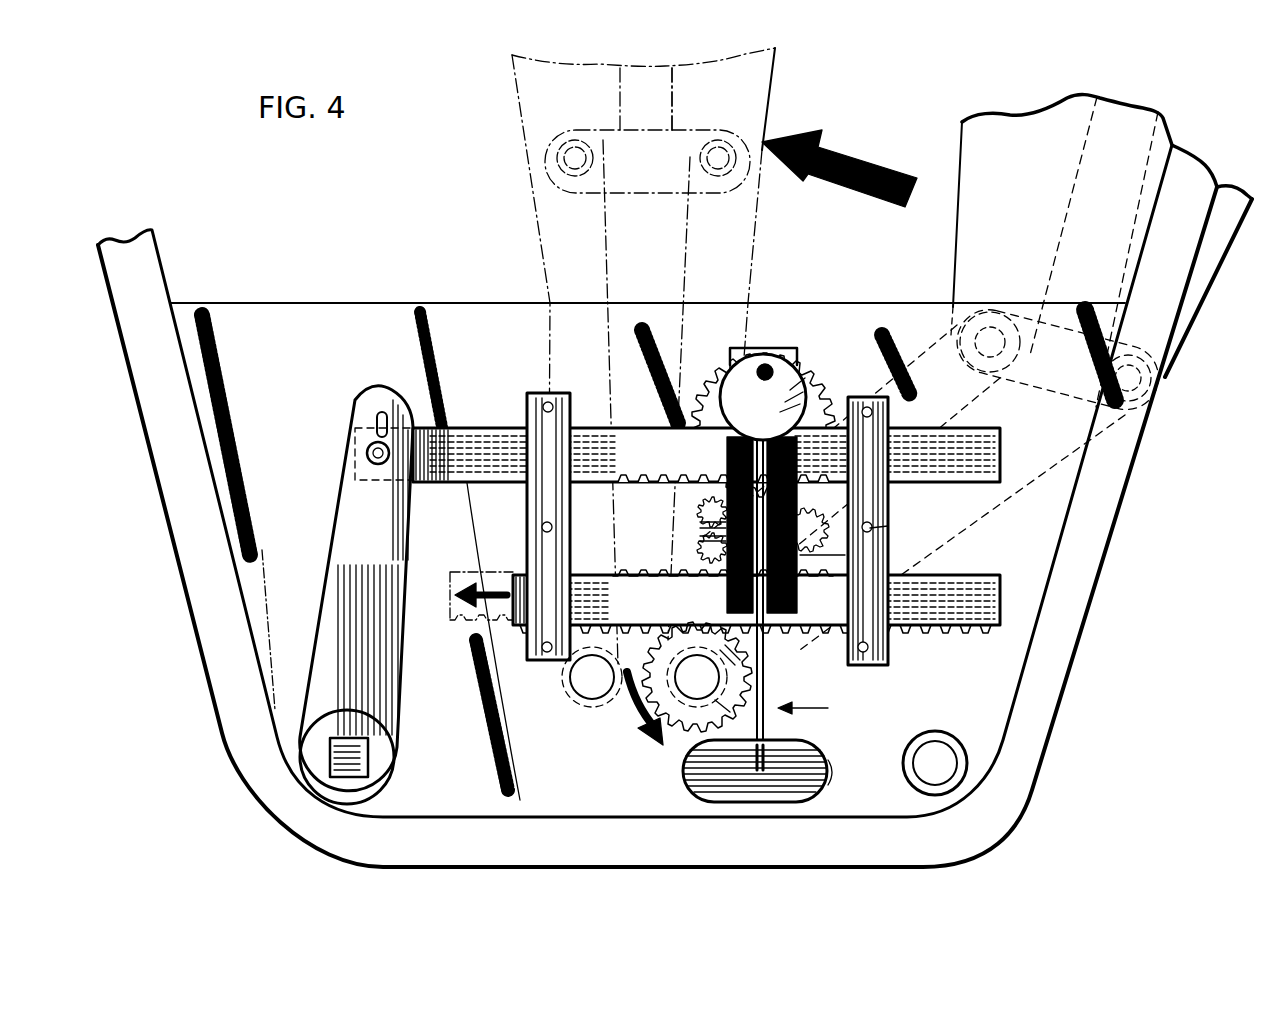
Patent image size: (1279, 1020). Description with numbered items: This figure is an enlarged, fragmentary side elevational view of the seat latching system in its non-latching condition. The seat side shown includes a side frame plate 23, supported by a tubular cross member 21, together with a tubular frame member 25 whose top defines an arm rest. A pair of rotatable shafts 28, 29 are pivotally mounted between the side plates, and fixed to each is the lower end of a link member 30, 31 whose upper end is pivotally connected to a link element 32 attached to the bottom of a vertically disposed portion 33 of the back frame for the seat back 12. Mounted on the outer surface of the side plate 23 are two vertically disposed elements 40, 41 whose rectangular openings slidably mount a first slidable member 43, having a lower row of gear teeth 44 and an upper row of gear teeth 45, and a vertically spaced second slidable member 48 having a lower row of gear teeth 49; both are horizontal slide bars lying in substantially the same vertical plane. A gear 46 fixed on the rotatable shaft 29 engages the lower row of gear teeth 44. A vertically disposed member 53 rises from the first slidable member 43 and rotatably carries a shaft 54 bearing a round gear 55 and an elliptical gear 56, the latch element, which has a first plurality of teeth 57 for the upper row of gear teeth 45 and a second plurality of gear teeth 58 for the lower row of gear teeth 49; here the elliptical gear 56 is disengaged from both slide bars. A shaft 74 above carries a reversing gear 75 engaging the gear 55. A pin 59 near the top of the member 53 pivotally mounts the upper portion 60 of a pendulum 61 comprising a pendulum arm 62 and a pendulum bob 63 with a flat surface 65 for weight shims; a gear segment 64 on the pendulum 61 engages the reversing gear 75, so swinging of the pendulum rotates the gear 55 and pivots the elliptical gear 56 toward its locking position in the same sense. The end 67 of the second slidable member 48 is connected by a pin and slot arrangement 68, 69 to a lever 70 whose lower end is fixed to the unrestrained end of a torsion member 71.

The seat back 12 is at (520, 105).
The tubular cross member 21 is at (915, 765).
The side frame plate 23 is at (294, 340).
The tubular frame member 25 is at (1075, 600).
The rotatable shaft 28 is at (578, 688).
The rotatable shaft 29 is at (725, 680).
The link member 30 is at (548, 220).
The link member 31 is at (732, 236).
The link element 32 is at (667, 167).
The vertically disposed portion 33 is at (670, 88).
The vertically disposed element 40 is at (540, 490).
The vertically disposed element 41 is at (870, 528).
The first slidable member 43 is at (707, 609).
The lower row of gear teeth 44 is at (930, 635).
The upper row of gear teeth 45 is at (630, 575).
The gear 46 is at (690, 732).
The second slidable member 48 is at (500, 459).
The lower row of gear teeth 49 is at (635, 484).
The vertically disposed member 53 is at (770, 640).
The shaft 54 is at (705, 560).
The round gear 55 is at (700, 540).
The elliptical gear 56 is at (700, 520).
The first plurality of teeth 57 is at (860, 555).
The second plurality of gear teeth 58 is at (700, 500).
The pin 59 is at (772, 345).
The upper portion 60 is at (800, 370).
The pendulum 61 is at (816, 708).
The pendulum arm 62 is at (764, 722).
The pendulum bob 63 is at (830, 775).
The gear segment 64 is at (720, 400).
The flat surface 65 is at (755, 771).
The end 67 is at (425, 428).
The pin 68 is at (368, 452).
The slot 69 is at (375, 412).
The lever 70 is at (387, 560).
The torsion member 71 is at (395, 778).
The shaft 74 is at (868, 531).
The reversing gear 75 is at (811, 516).